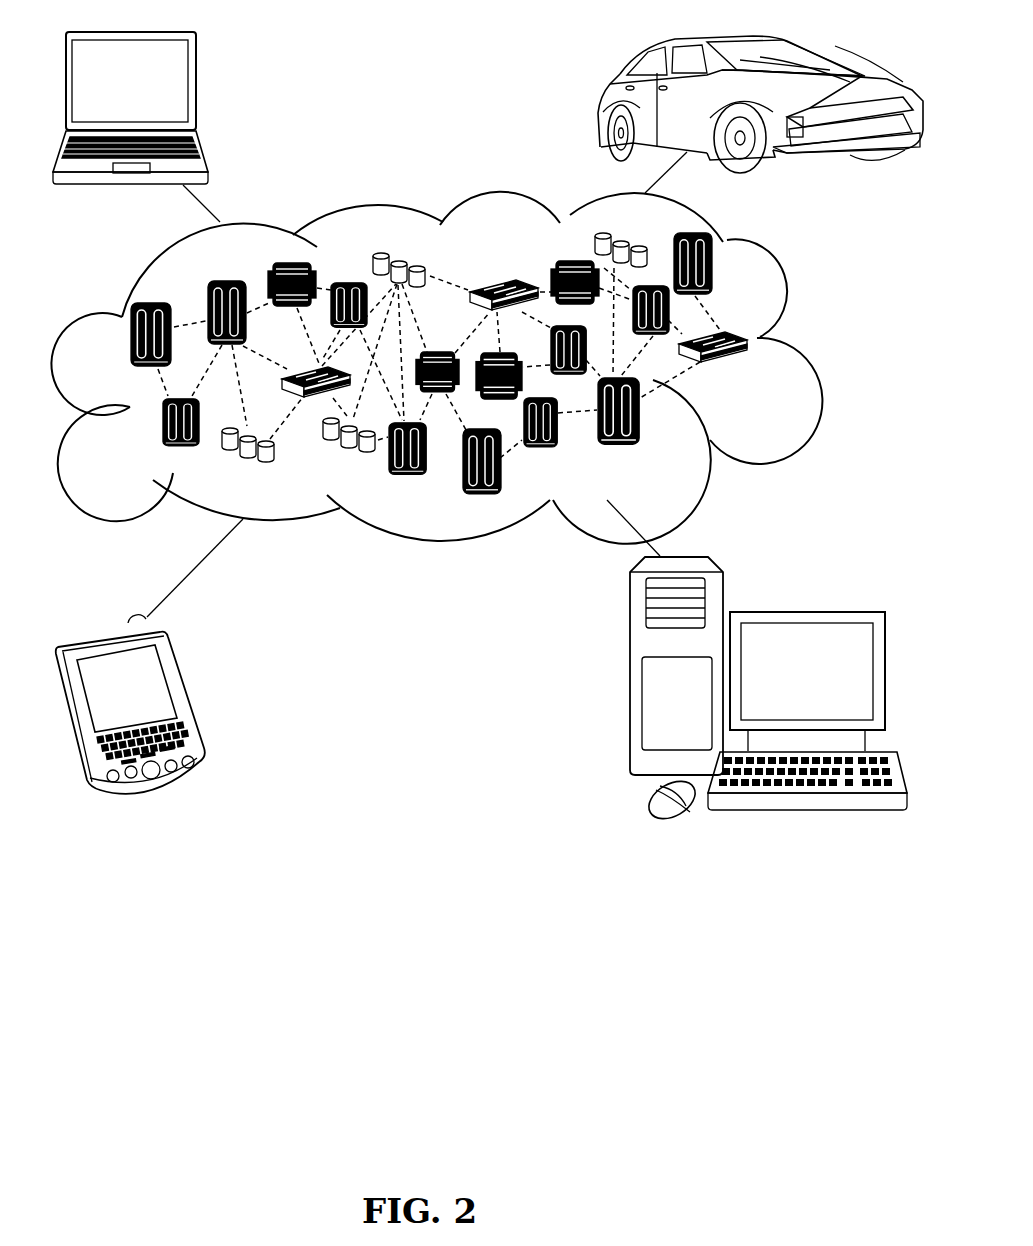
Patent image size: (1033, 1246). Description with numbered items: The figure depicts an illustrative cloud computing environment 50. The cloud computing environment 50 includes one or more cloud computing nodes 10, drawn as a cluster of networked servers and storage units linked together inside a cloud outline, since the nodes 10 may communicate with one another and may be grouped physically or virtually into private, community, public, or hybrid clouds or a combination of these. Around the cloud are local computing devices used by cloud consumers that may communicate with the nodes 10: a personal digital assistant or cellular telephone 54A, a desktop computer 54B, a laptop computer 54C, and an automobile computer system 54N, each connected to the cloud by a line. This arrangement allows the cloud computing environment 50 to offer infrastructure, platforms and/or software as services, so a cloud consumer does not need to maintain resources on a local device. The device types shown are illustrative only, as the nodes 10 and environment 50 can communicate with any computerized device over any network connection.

The cloud computing nodes 10 is at (752, 371).
The cloud computing environment 50 is at (806, 343).
The personal digital assistant (PDA) or cellular telephone 54A is at (183, 700).
The desktop computer 54B is at (804, 612).
The laptop computer 54C is at (197, 92).
The automobile computer system 54N is at (600, 103).